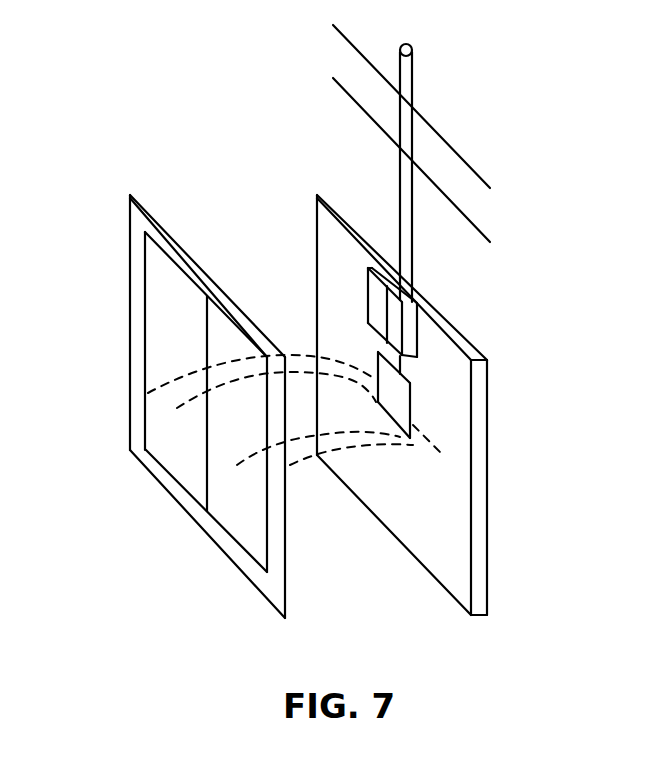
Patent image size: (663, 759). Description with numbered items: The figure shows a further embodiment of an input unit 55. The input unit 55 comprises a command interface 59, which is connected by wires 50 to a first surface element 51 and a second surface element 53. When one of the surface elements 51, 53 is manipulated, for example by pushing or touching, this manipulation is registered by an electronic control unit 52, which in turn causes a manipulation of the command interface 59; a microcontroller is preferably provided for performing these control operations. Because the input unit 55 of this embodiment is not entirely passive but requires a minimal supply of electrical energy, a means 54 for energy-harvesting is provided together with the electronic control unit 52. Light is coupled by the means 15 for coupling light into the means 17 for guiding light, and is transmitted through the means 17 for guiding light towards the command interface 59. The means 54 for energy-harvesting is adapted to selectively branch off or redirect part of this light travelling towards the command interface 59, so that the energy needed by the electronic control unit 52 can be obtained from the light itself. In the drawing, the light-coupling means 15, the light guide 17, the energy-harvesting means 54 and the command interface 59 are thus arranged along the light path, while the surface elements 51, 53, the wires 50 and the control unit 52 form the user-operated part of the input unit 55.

The means for coupling light 15 is at (412, 50).
The means for guiding light 17 is at (408, 190).
The wires 50 is at (310, 393).
The first surface element 51 is at (190, 434).
The electronic control unit 52 is at (440, 500).
The second surface element 53 is at (228, 497).
The means for energy-harvesting 54 is at (408, 336).
The input unit 55 is at (272, 262).
The command interface 59 is at (397, 402).